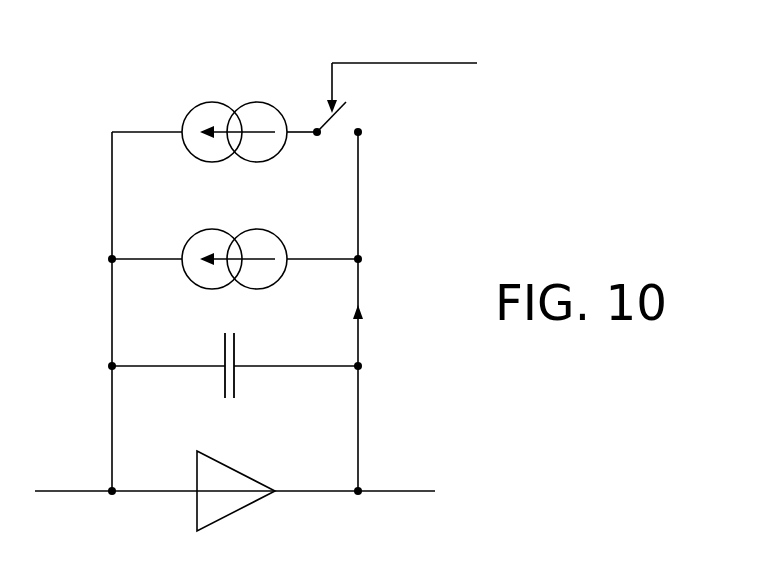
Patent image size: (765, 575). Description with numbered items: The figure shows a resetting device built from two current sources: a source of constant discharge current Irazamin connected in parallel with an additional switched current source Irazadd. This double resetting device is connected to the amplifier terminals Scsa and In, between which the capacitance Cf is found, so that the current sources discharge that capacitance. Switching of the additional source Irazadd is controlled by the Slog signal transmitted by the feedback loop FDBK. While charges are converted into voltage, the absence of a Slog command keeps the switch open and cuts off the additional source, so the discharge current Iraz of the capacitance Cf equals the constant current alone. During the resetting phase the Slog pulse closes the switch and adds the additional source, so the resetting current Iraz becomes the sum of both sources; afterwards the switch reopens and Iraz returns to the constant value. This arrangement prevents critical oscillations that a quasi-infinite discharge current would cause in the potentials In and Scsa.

The additional switched current source Irazadd is at (214, 112).
The source of constant discharge current Irazamin is at (235, 239).
The capacitance Cf is at (235, 374).
The discharge current Iraz is at (381, 316).
The Slog signal Slog is at (422, 91).
The feedback loop FDBK is at (415, 40).
The terminal In is at (112, 526).
The terminal Scsa is at (356, 526).